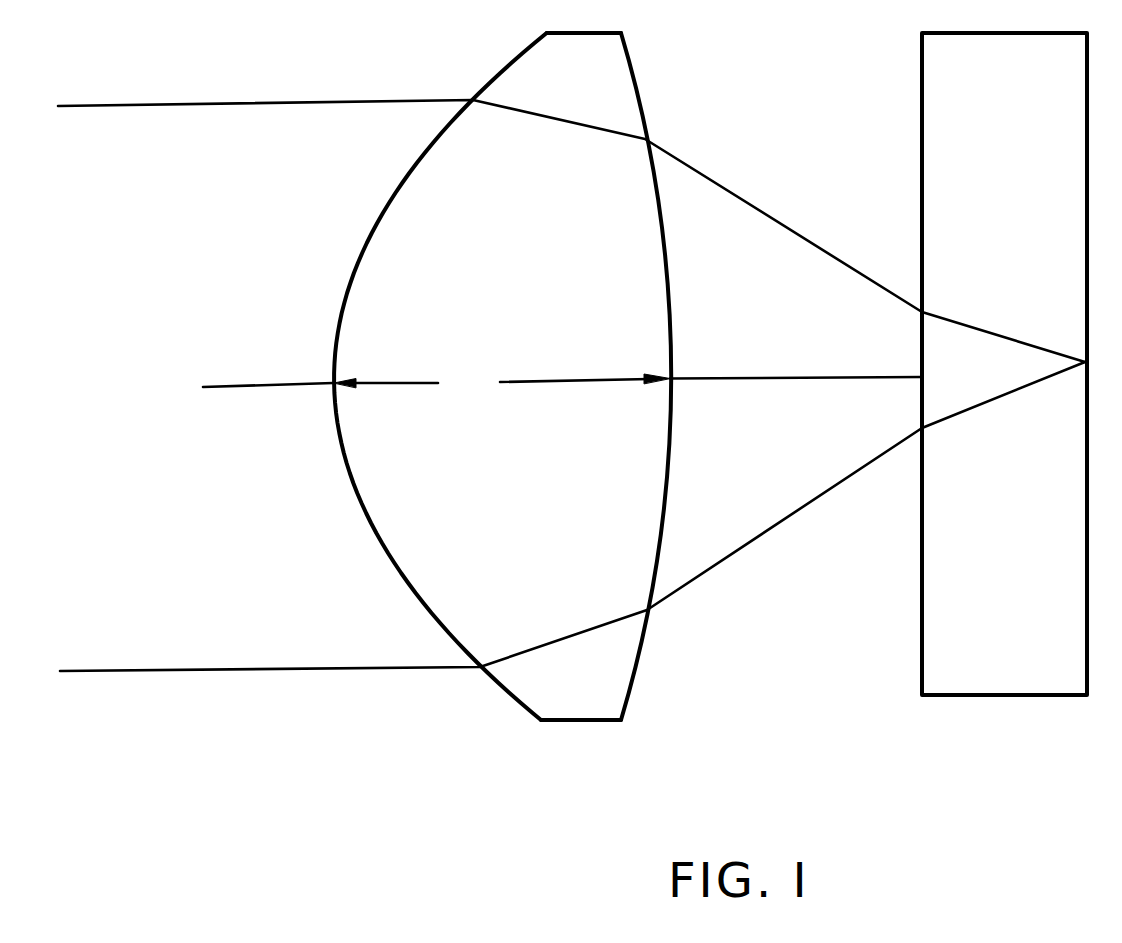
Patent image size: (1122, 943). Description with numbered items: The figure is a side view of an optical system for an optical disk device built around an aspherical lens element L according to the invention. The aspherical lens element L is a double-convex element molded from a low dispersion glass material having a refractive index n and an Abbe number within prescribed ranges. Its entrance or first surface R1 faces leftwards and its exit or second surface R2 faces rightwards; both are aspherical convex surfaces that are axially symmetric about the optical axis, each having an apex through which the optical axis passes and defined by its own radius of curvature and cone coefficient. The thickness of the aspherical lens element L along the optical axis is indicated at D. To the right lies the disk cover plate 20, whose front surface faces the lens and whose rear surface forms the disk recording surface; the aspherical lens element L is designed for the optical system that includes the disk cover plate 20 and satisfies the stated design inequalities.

The disk cover plate 20 is at (1010, 697).
The aspherical lens element L is at (492, 376).
The first surface R1 is at (353, 270).
The second surface R2 is at (668, 309).
The thickness D is at (502, 382).
The refractive index n is at (581, 699).